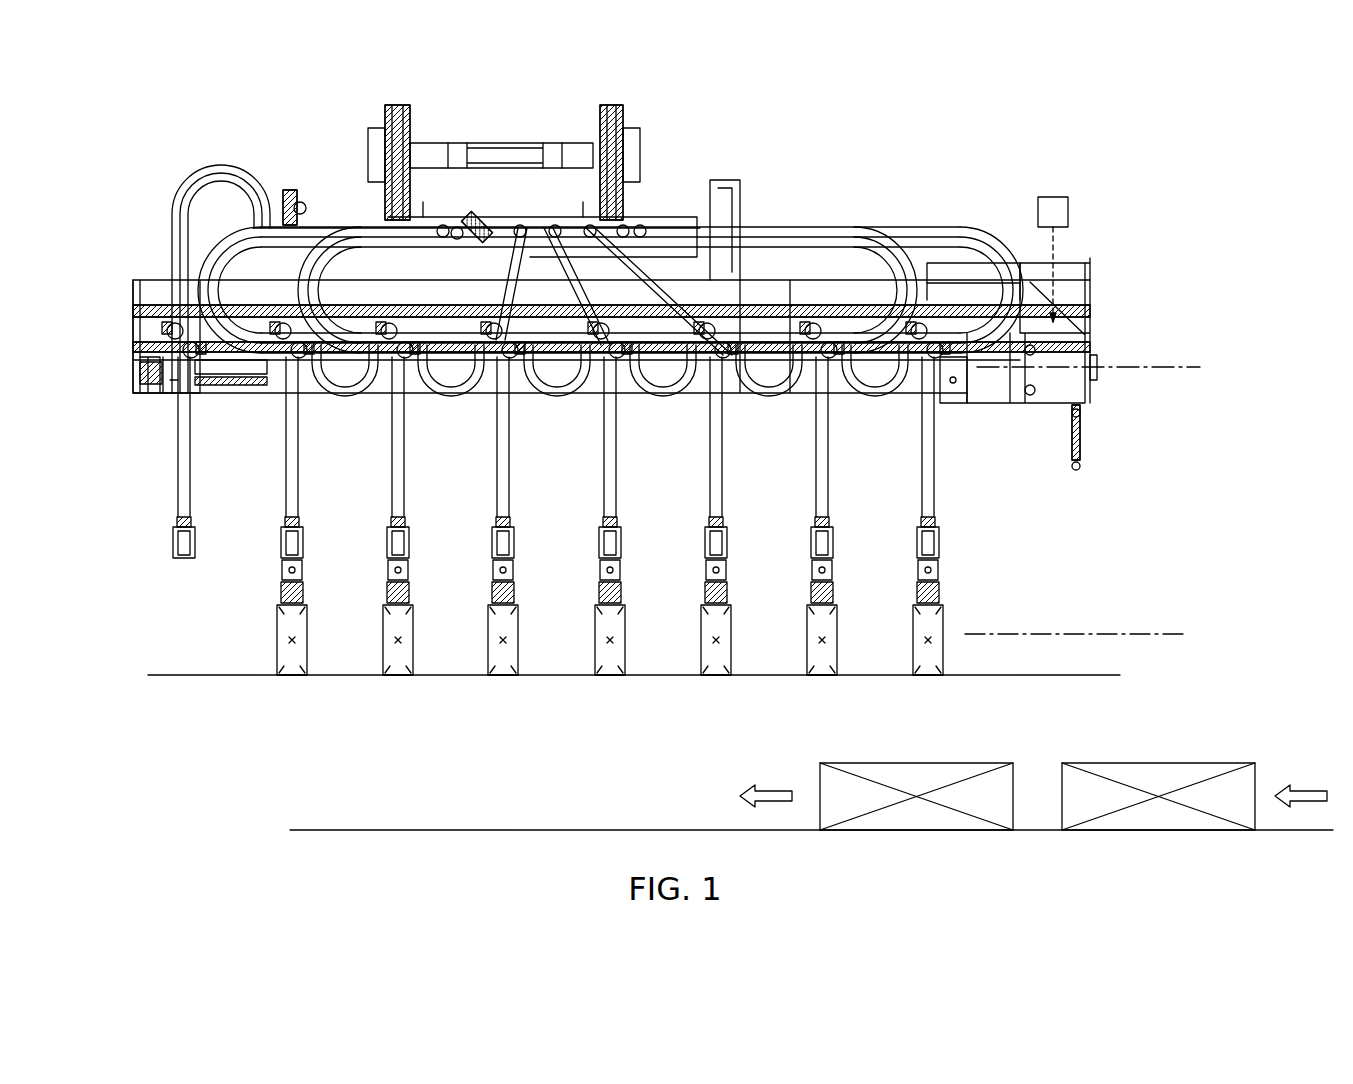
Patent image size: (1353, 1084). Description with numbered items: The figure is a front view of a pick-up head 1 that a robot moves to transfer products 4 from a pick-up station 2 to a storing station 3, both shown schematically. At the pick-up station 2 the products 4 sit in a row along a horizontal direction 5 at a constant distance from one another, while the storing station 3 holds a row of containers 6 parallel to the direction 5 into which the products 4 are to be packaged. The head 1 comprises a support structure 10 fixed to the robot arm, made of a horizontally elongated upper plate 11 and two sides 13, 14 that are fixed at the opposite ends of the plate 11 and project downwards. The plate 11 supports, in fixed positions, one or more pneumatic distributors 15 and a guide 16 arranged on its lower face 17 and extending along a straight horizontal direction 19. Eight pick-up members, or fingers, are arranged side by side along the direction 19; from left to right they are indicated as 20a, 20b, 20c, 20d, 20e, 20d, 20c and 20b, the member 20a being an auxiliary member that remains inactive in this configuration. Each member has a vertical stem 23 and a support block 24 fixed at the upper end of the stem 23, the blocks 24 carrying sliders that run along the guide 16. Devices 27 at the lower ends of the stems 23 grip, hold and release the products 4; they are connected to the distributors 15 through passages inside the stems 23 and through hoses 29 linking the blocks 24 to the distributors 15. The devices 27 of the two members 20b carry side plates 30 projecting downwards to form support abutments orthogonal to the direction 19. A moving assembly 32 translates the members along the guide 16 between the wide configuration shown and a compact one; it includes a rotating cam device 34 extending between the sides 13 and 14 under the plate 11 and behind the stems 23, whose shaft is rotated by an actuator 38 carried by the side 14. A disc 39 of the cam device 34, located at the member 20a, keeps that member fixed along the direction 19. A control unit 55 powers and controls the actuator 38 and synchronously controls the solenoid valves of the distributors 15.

The pick-up head 1 is at (1220, 165).
The pick-up station 2 is at (152, 672).
The storing station 3 is at (362, 828).
The products 4 is at (296, 676).
The horizontal direction 5 is at (1185, 634).
The containers 6 is at (985, 763).
The support structure 10 is at (962, 277).
The upper plate 11 is at (611, 282).
The side 13 is at (140, 385).
The side 14 is at (993, 390).
The pneumatic distributors 15 is at (507, 227).
The guide 16 is at (776, 300).
The lower face 17 is at (955, 317).
The straight horizontal direction 19 is at (1185, 365).
The auxiliary pick-up member 20a is at (177, 503).
The pick-up member 20b is at (285, 503).
The pick-up member 20c is at (391, 503).
The pick-up member 20d is at (496, 503).
The pick-up member 20e is at (603, 503).
The vertical stems 23 is at (178, 468).
The support blocks 24 is at (165, 345).
The devices 27 is at (175, 548).
The hoses 29 is at (192, 176).
The side plates 30 is at (277, 640).
The moving assembly 32 is at (947, 410).
The rotating cam device 34 is at (160, 392).
The actuator 38 is at (1073, 390).
The disc 39 is at (168, 400).
The control unit 55 is at (1070, 210).